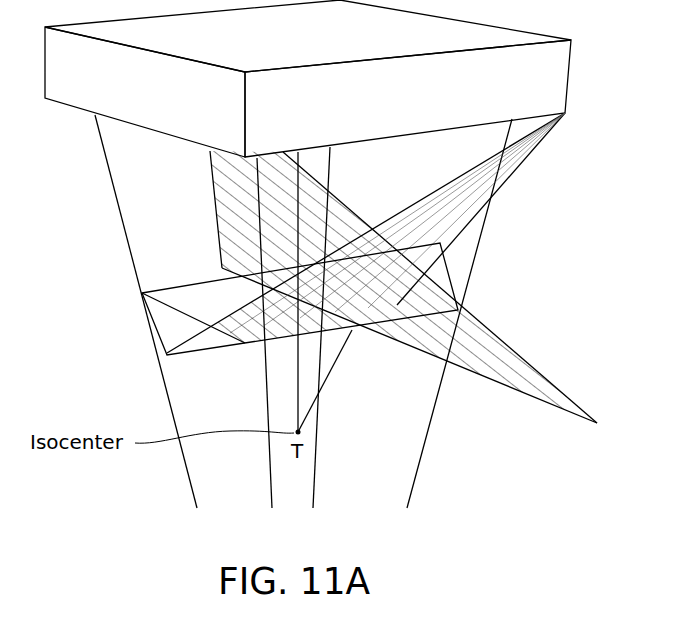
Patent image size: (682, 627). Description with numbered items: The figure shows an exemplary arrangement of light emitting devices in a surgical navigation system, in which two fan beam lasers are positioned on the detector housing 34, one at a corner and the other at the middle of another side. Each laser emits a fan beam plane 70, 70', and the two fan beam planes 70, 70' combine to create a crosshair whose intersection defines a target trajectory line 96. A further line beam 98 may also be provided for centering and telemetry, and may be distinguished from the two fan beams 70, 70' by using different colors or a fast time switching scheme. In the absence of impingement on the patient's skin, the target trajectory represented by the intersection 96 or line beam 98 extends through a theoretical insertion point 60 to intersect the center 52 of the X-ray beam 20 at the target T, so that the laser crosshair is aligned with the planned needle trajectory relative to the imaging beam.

The detector housing 34 is at (530, 80).
The fan beam plane 70 is at (377, 270).
The fan beam plane 70' is at (398, 233).
The line beam laser 98 is at (412, 185).
The target trajectory line 96 is at (430, 276).
The insertion point 60 is at (460, 307).
The center of the X-ray beam 52 is at (312, 368).
The X-ray beam 20 is at (338, 445).